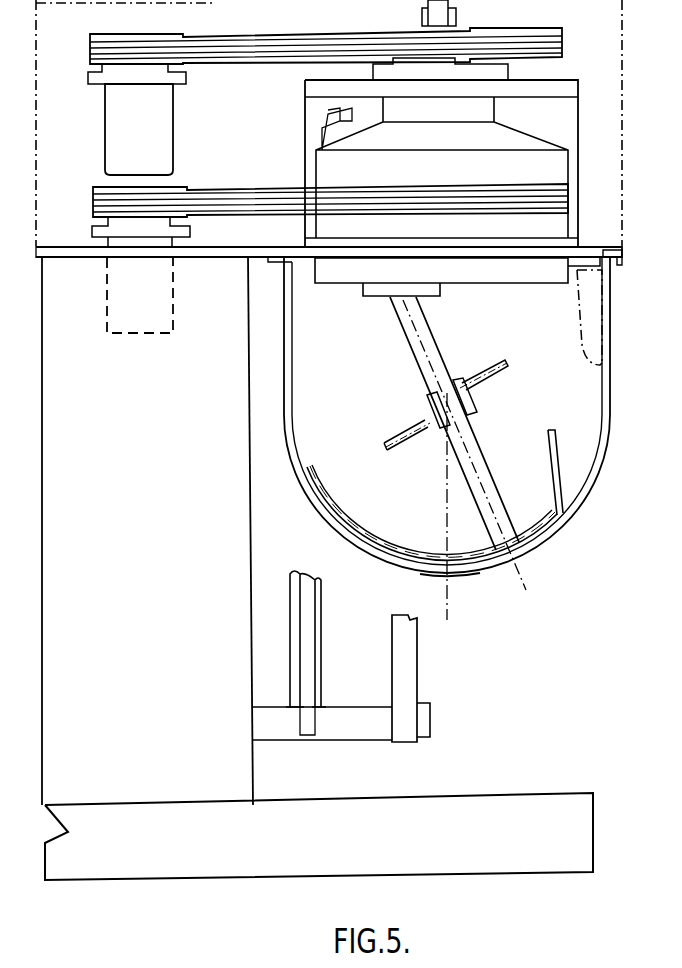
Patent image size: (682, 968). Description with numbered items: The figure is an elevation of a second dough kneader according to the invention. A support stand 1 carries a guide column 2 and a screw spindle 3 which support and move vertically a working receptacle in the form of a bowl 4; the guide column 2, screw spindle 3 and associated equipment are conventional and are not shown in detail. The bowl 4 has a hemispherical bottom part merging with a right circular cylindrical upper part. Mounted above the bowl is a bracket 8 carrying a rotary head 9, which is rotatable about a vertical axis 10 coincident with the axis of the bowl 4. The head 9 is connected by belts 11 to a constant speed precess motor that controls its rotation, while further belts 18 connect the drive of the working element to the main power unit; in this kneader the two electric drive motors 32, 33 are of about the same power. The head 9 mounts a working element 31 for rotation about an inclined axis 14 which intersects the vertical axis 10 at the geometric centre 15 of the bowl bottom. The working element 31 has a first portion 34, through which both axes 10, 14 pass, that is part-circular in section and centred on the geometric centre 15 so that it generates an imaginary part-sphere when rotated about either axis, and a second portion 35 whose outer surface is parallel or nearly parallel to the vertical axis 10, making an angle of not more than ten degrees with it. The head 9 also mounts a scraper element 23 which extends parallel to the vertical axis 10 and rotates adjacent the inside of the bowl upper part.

The support stand 1 is at (128, 870).
The guide column 2 is at (418, 672).
The screw spindle 3 is at (308, 653).
The bowl 4 is at (587, 495).
The bracket 8 is at (558, 86).
The rotary head 9 is at (572, 160).
The vertical axis 10 is at (450, 597).
The belts 11 is at (248, 188).
The inclined axis 14 is at (522, 583).
The geometric centre 15 is at (447, 403).
The belts 18 is at (276, 60).
The scraper element 23 is at (590, 318).
The working element 31 is at (460, 570).
The electric drive motor 32 is at (120, 118).
The electric drive motor 33 is at (110, 300).
The first portion 34 is at (348, 520).
The second portion 35 is at (550, 465).